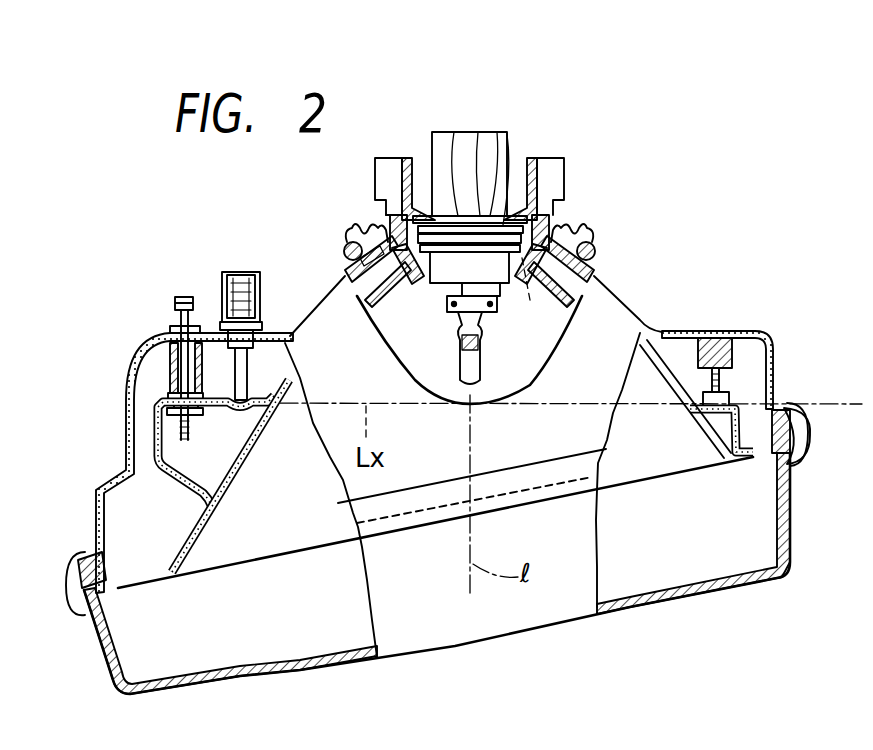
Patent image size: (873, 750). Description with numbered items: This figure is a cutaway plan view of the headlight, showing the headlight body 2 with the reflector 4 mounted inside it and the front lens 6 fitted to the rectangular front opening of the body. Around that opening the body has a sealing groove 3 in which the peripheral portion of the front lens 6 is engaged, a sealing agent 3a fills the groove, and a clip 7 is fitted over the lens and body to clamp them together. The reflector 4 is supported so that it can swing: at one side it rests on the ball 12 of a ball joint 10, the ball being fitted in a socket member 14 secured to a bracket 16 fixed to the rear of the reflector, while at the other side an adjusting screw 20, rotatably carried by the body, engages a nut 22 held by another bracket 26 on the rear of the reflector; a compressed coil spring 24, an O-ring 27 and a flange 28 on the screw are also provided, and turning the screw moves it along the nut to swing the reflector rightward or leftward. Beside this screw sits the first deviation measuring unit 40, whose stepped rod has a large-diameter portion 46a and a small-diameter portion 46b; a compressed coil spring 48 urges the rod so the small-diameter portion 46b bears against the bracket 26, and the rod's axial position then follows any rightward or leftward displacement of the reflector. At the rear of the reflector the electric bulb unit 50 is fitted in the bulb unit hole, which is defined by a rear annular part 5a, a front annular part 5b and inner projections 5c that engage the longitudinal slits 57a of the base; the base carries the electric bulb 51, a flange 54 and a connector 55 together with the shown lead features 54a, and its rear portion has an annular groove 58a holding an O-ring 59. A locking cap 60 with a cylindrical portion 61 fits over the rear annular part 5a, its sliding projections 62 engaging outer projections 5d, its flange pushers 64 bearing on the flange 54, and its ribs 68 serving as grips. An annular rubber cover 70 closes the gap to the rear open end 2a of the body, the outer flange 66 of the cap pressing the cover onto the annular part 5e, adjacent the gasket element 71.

The headlight body 2 is at (640, 320).
The rear open end 2a is at (346, 244).
The sealing groove 3 is at (778, 456).
The sealing agent 3a is at (800, 456).
The reflector 4 is at (664, 393).
The rear annular part 5a is at (376, 292).
The front annular part 5b is at (420, 302).
The inner projections 5c is at (490, 330).
The outer projections 5d is at (522, 250).
The annular part 5e is at (352, 278).
The front lens 6 is at (438, 650).
The clip 7 is at (801, 470).
The ball joint 10 is at (734, 378).
The ball 12 is at (726, 398).
The socket member 14 is at (740, 428).
The bracket 16 is at (803, 432).
The adjusting screw 20 is at (158, 384).
The nut 22 is at (170, 413).
The compressed coil spring 24 is at (168, 358).
The bracket 26 is at (156, 455).
The O-ring 27 is at (170, 329).
The flange 28 is at (175, 326).
The first deviation measuring unit 40 is at (272, 314).
The large-diameter portion 46a is at (234, 310).
The small-diameter portion 46b is at (250, 375).
The compressed coil spring 48 is at (240, 272).
The electric bulb unit 50 is at (425, 152).
The electric bulb 51 is at (486, 366).
The flange 54 is at (497, 132).
The lead wire 54a is at (454, 132).
The connector 55 is at (507, 134).
The longitudinal slits 57a is at (468, 389).
The annular groove 58a is at (436, 150).
The O-ring 59 is at (478, 132).
The locking cap 60 is at (548, 152).
The cylindrical portion 61 is at (527, 238).
The sliding projections 62 is at (527, 295).
The flange pushers 64 is at (408, 157).
The outer flange 66 is at (394, 215).
The ribs 68 is at (380, 157).
The annular rubber cover 70 is at (352, 228).
The gasket 71 is at (352, 260).